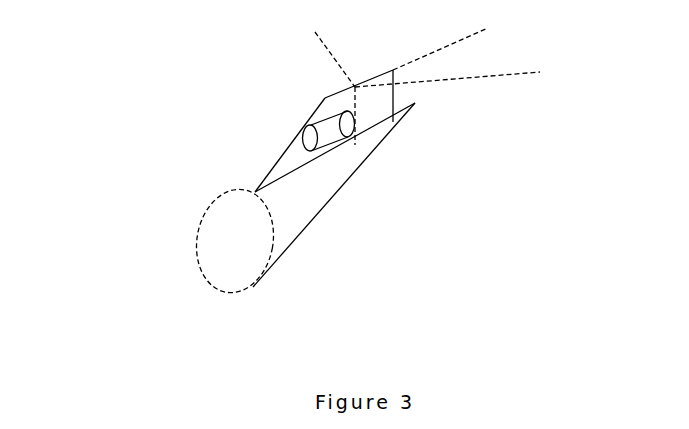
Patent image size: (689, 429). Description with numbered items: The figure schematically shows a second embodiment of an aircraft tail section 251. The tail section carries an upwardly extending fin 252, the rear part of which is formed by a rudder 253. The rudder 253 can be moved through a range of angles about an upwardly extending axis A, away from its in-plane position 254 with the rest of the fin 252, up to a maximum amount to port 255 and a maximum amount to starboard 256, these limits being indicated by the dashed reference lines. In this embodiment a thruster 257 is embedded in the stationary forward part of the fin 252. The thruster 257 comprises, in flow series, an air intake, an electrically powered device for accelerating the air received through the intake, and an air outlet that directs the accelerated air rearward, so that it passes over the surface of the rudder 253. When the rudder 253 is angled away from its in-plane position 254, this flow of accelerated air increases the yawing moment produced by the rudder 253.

The aircraft tail section 251 is at (196, 183).
The fin 252 is at (297, 152).
The rudder 253 is at (373, 122).
The in-plane position 254 is at (488, 28).
The maximum deflection to port 255 is at (540, 74).
The maximum deflection to starboard 256 is at (323, 43).
The thruster 257 is at (343, 150).
The upwardly extending axis A is at (348, 110).